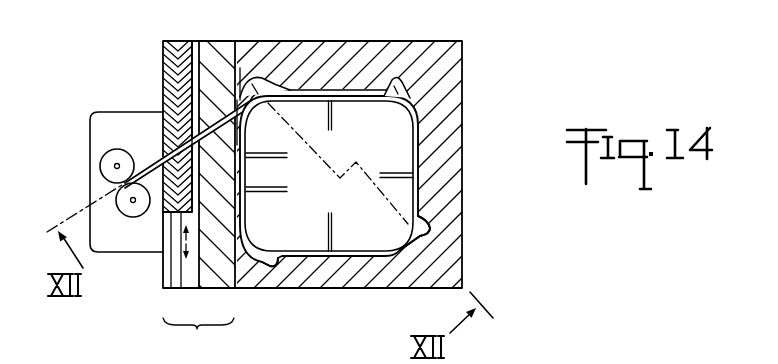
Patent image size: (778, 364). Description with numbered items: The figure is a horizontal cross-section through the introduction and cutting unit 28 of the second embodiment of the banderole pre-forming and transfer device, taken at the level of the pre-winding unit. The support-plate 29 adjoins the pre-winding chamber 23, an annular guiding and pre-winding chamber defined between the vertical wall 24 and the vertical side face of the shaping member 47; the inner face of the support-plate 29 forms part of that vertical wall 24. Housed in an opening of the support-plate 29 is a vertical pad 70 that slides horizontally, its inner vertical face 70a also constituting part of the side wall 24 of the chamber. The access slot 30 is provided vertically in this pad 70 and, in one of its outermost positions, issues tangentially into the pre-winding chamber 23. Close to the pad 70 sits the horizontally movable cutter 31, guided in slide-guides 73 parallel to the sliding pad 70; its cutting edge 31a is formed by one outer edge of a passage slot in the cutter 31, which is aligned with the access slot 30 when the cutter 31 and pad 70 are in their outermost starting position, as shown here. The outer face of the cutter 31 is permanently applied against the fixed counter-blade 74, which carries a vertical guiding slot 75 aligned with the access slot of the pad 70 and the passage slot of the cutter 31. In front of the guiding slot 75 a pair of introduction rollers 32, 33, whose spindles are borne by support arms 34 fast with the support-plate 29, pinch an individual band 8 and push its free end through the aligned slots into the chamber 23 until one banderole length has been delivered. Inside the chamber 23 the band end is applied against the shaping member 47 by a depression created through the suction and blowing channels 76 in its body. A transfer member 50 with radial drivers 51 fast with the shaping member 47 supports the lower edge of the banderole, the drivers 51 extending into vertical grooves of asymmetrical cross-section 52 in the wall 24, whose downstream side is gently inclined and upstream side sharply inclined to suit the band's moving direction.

The individual band 8 is at (98, 193).
The pre-winding chamber 23 is at (377, 257).
The vertical wall 24 is at (420, 154).
The introduction and cutting unit 28 is at (140, 77).
The support-plate 29 is at (198, 332).
The access slot 30 is at (206, 113).
The cutter 31 is at (186, 43).
The cutting edge 31a is at (217, 233).
The introduction roller 32 is at (102, 152).
The introduction roller 33 is at (123, 214).
The support arm 34 is at (134, 248).
The shaping member 47 is at (383, 147).
The transfer member 50 is at (406, 101).
The radial driver 51 is at (398, 85).
The groove of asymmetrical cross-section 52 is at (278, 262).
The vertical pad 70 is at (220, 277).
The inner vertical face of pad 70a is at (237, 145).
The slide-guides 73 is at (182, 280).
The fixed counter-blade 74 is at (171, 40).
The guiding slot 75 is at (168, 147).
The suction and blowing channels 76 is at (272, 181).